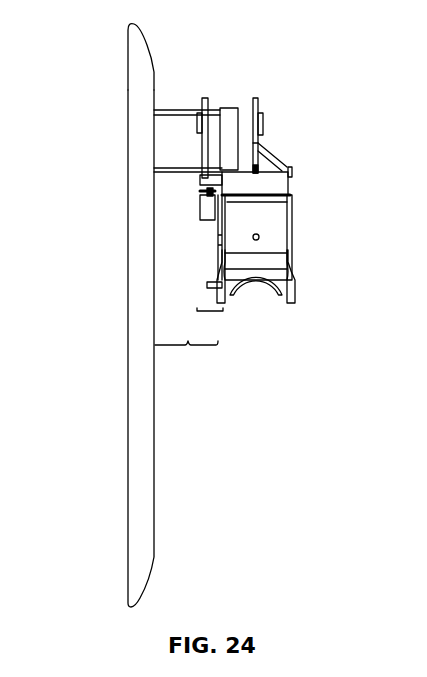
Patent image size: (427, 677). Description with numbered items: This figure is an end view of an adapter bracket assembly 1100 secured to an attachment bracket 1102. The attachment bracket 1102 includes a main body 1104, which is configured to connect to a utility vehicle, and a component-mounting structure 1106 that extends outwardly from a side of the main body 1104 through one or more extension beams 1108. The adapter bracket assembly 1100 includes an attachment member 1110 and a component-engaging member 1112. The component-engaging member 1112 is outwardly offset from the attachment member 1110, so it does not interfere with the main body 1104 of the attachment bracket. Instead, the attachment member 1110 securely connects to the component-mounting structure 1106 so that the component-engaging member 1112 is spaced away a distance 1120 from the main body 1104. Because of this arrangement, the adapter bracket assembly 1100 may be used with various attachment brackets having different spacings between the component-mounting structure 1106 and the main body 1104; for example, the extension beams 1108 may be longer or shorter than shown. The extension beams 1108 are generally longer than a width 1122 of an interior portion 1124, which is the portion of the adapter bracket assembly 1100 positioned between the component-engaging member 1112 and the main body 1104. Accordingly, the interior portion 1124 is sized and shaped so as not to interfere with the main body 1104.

The adapter bracket assembly 1100 is at (292, 203).
The attachment bracket 1102 is at (127, 222).
The main body 1104 is at (127, 90).
The component-mounting structure 1106 is at (229, 108).
The extension beams 1108 is at (186, 110).
The attachment member 1110 is at (256, 126).
The component-engaging member 1112 is at (292, 285).
The distance 1120 is at (186, 358).
The width 1122 is at (211, 313).
The interior portion 1124 is at (262, 166).